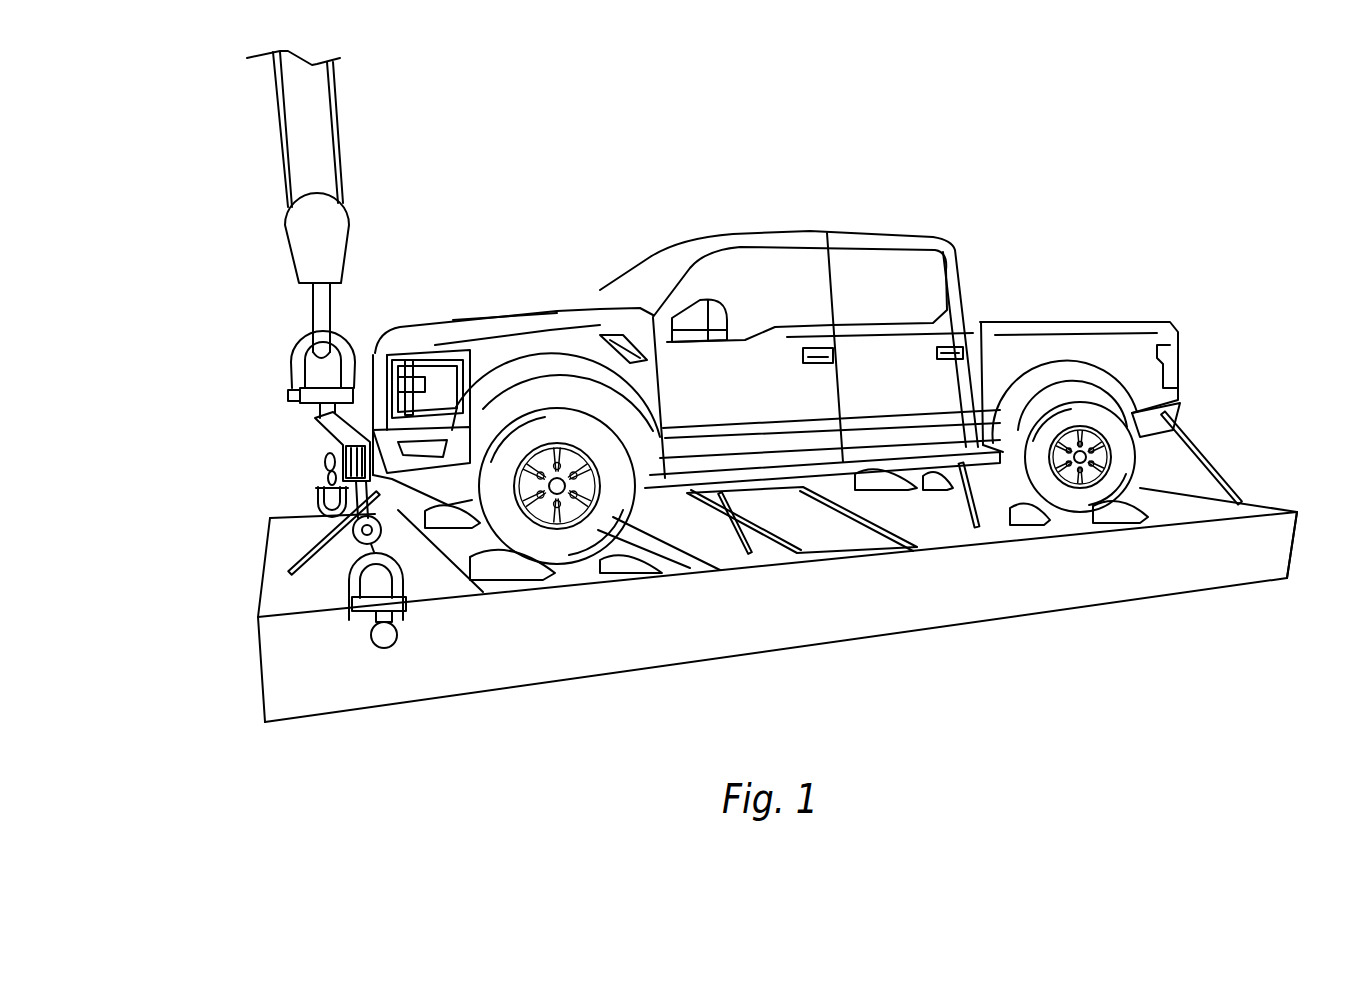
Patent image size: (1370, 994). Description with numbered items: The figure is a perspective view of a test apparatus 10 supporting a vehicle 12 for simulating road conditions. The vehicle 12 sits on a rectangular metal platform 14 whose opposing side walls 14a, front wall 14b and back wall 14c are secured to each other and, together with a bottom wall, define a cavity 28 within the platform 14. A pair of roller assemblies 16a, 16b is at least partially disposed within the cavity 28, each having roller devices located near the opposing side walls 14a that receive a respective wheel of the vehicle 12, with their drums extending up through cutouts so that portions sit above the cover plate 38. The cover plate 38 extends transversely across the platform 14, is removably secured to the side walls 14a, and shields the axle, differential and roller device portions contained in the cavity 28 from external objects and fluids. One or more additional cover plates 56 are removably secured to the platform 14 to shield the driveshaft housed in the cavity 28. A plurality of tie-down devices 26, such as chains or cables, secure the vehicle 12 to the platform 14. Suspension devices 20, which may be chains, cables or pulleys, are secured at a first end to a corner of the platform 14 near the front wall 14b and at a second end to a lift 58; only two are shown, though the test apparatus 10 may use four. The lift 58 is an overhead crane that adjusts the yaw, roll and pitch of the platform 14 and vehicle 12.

The test apparatus 10 is at (703, 688).
The vehicle 12 is at (524, 212).
The platform 14 is at (430, 680).
The side wall 14a is at (1095, 578).
The front wall 14b is at (258, 648).
The back wall 14c is at (1290, 555).
The roller assembly 16a is at (540, 600).
The roller assembly 16b is at (1150, 535).
The suspension device 20 is at (300, 450).
The tie-down device 26 is at (300, 553).
The cavity 28 is at (932, 527).
The cover plate 38 is at (470, 568).
The cover plate 56 is at (717, 550).
The lift 58 is at (275, 188).